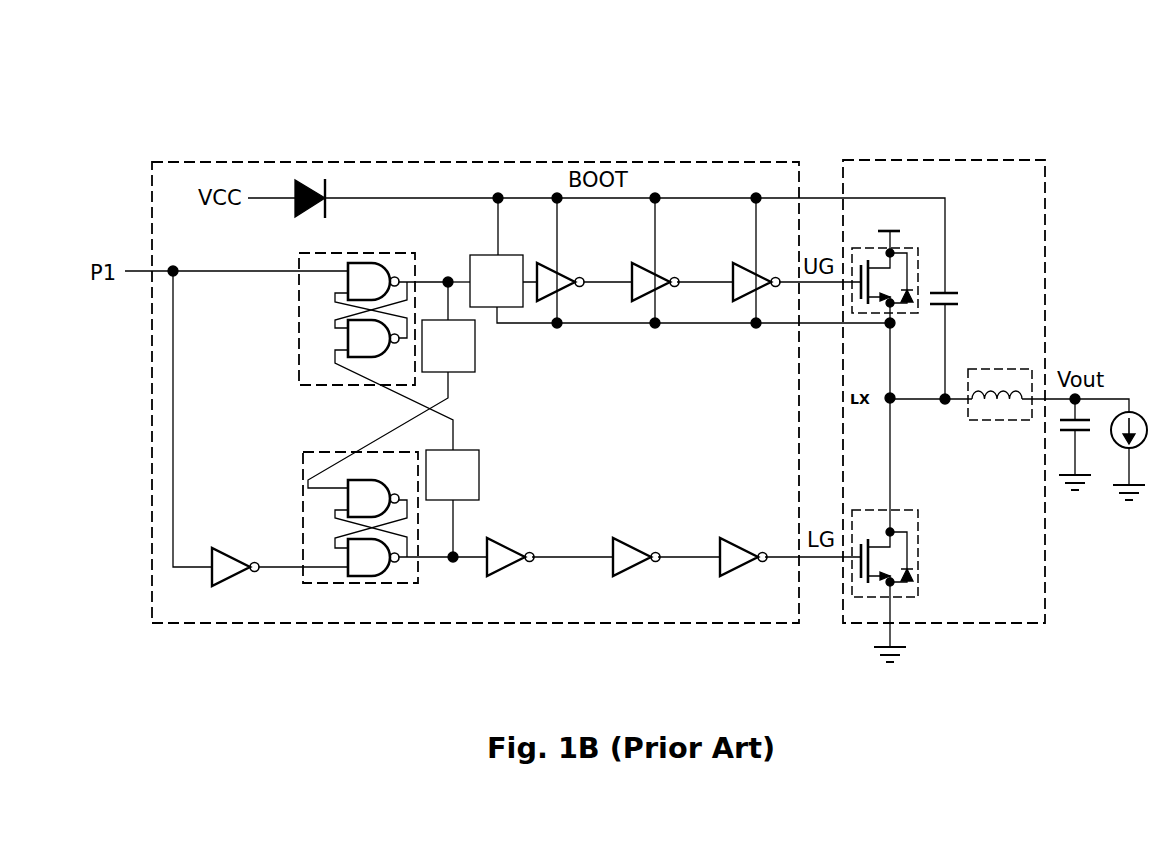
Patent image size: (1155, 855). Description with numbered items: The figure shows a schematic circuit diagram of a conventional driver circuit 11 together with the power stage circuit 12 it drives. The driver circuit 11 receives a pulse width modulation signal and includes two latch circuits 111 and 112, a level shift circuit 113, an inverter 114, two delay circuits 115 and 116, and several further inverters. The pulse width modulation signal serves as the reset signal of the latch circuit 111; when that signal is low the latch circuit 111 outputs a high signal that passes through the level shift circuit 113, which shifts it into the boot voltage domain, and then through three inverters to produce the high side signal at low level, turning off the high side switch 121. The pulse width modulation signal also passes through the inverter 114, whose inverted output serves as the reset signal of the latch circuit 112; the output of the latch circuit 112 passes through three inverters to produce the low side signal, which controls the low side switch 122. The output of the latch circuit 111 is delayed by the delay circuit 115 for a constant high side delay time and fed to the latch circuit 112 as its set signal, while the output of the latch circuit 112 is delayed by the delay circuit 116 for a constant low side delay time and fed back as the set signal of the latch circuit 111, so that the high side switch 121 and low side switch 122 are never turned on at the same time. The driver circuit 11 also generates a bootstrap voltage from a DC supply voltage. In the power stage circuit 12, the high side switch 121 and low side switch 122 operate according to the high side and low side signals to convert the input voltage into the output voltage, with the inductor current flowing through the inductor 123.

The driver circuit 11 is at (786, 608).
The power stage circuit 12 is at (1027, 608).
The latch circuit 111 is at (298, 296).
The latch circuit 112 is at (303, 462).
The level shift circuit 113 is at (480, 294).
The inverter 114 is at (224, 550).
The delay circuit 115 is at (431, 359).
The delay circuit 116 is at (436, 487).
The high side switch 121 is at (904, 248).
The low side switch 122 is at (898, 510).
The inductor 123 is at (976, 368).